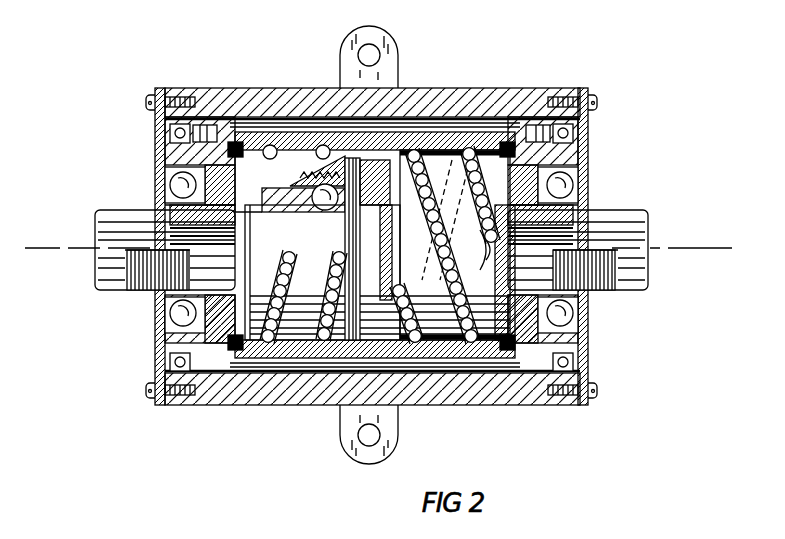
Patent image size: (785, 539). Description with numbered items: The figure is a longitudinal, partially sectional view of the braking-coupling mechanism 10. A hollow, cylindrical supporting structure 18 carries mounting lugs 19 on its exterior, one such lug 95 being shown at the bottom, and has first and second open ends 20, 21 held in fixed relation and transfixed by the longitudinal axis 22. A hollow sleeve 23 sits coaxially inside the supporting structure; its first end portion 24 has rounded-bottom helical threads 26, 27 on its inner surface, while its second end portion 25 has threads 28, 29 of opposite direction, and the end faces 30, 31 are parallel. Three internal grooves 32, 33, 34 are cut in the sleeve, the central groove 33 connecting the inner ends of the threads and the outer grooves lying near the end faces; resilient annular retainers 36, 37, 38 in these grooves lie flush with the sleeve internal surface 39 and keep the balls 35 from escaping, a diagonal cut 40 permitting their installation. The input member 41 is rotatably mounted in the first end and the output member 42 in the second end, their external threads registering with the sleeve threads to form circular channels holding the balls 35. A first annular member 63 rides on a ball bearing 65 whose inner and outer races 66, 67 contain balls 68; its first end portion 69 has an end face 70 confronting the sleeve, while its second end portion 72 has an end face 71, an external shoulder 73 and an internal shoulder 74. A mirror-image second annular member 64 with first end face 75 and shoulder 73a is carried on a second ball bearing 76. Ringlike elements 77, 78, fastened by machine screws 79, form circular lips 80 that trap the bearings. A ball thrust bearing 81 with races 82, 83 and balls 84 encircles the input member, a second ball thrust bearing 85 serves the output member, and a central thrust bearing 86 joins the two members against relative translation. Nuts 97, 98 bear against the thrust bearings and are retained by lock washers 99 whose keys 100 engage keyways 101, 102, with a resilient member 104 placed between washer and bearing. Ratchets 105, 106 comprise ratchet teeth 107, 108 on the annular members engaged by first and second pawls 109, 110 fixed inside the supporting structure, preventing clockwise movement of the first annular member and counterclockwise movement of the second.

The braking-coupling mechanism 10 is at (161, 42).
The supporting structure 18 is at (319, 88).
The mounting lugs 19 is at (390, 44).
The first open end 20 is at (165, 95).
The second open end 21 is at (580, 90).
The longitudinal axis 22 is at (679, 248).
The sleeve 23 is at (330, 370).
The sleeve first end portion 24 is at (275, 370).
The sleeve second end portion 25 is at (455, 368).
The helical thread 26 is at (263, 86).
The helical thread 27 is at (299, 150).
The helical thread 28 is at (440, 155).
The helical thread 29 is at (493, 150).
The end face 30 is at (230, 370).
The end face 31 is at (520, 360).
The groove 32 is at (248, 378).
The central groove 33 is at (394, 368).
The groove 34 is at (482, 365).
The balls 35 is at (290, 268).
The annular retainer 36 is at (223, 260).
The annular retainer 37 is at (345, 345).
The annular retainer 38 is at (588, 147).
The sleeve internal surface 39 is at (303, 367).
The diagonal cross-sectional cut 40 is at (242, 275).
The input member 41 is at (304, 270).
The output member 42 is at (465, 260).
The first annular member 63 is at (202, 375).
The second annular member 64 is at (537, 370).
The ball bearing 65 is at (155, 153).
The inner race 66 is at (155, 157).
The outer race 67 is at (165, 113).
The balls 68 is at (155, 147).
The first annular member first end portion 69 is at (235, 276).
The end face 70 is at (230, 330).
The end face 71 is at (160, 340).
The first annular member second end portion 72 is at (157, 360).
The external shoulder 73 is at (157, 380).
The external shoulder 73a is at (588, 383).
The internal shoulder 74 is at (158, 332).
The first end face 75 is at (581, 337).
The second ball bearing 76 is at (585, 135).
The ringlike element 77 is at (158, 400).
The ringlike element 78 is at (590, 375).
The machine screws 79 is at (591, 397).
The circular lips 80 is at (592, 357).
The ball thrust bearing 81 is at (160, 165).
The inner race 82 is at (205, 203).
The outer race 83 is at (155, 163).
The balls 84 is at (155, 175).
The second ball thrust bearing 85 is at (590, 165).
The central thrust bearing 86 is at (270, 159).
The lower mounting lug 95 is at (398, 418).
The nut 97 is at (140, 302).
The nut 98 is at (602, 300).
The lock washer 99 is at (155, 187).
The key 100 is at (165, 208).
The keyway 101 is at (130, 203).
The keyway 102 is at (608, 207).
The resilient member 104 is at (157, 310).
The ratchet 105 is at (218, 128).
The ratchet 106 is at (521, 130).
The ratchet teeth 107 is at (200, 128).
The ratchet teeth 108 is at (531, 128).
The first pawl 109 is at (222, 133).
The second pawl 110 is at (508, 140).